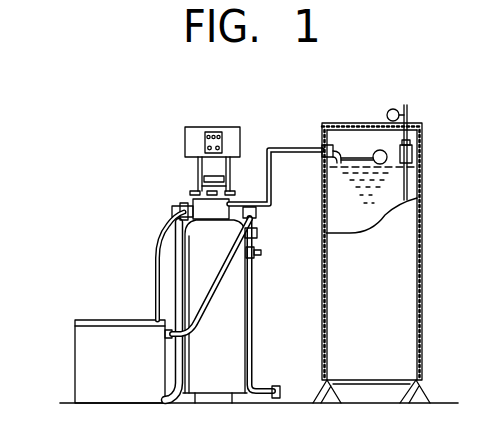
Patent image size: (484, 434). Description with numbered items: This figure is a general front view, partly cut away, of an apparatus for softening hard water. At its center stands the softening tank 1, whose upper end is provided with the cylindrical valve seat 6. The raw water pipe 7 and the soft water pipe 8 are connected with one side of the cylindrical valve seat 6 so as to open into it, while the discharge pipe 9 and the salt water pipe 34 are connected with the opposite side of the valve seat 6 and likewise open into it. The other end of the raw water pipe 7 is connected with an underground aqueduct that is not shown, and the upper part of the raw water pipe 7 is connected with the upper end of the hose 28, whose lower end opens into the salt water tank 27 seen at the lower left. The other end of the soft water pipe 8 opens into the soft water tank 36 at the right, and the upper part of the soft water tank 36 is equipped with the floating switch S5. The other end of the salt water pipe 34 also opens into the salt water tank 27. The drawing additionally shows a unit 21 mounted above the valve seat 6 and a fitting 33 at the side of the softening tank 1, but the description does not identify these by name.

The softening tank 1 is at (222, 352).
The cylindrical valve seat 6 is at (216, 212).
The raw water pipe 7 is at (249, 318).
The soft water pipe 8 is at (295, 147).
The discharge pipe 9 is at (192, 202).
The controller 21 is at (200, 135).
The salt water tank 27 is at (92, 355).
The hose 28 is at (223, 280).
The coupling 33 is at (178, 206).
The salt water pipe 34 is at (156, 278).
The soft water tank 36 is at (408, 273).
The floating switch S5 is at (412, 156).